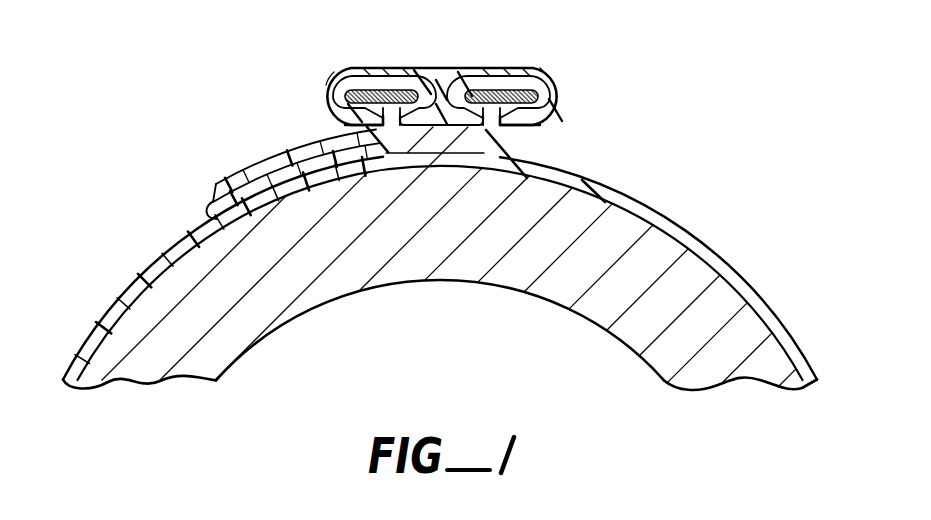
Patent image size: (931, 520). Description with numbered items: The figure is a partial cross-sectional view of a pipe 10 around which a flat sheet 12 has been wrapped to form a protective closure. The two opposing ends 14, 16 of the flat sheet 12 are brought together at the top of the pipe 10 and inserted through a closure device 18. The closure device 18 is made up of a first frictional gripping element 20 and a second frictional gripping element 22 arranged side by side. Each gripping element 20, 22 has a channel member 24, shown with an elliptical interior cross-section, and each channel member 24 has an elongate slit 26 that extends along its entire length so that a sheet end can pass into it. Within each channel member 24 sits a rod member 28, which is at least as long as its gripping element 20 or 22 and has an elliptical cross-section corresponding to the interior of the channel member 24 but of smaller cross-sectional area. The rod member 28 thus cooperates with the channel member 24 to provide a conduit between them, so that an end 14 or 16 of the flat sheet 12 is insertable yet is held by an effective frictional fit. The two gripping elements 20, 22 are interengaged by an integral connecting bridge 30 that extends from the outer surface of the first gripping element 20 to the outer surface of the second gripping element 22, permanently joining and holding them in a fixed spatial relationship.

The pipe 10 is at (690, 287).
The flat sheet 12 is at (655, 215).
The end of the flat sheet 14 is at (248, 212).
The end of the flat sheet 16 is at (250, 173).
The closure device 18 is at (460, 67).
The first frictional gripping element 20 is at (563, 76).
The second frictional gripping element 22 is at (328, 75).
The channel member 24 is at (333, 125).
The slit 26 is at (406, 130).
The rod member 28 is at (385, 92).
The integral connecting bridge 30 is at (450, 105).